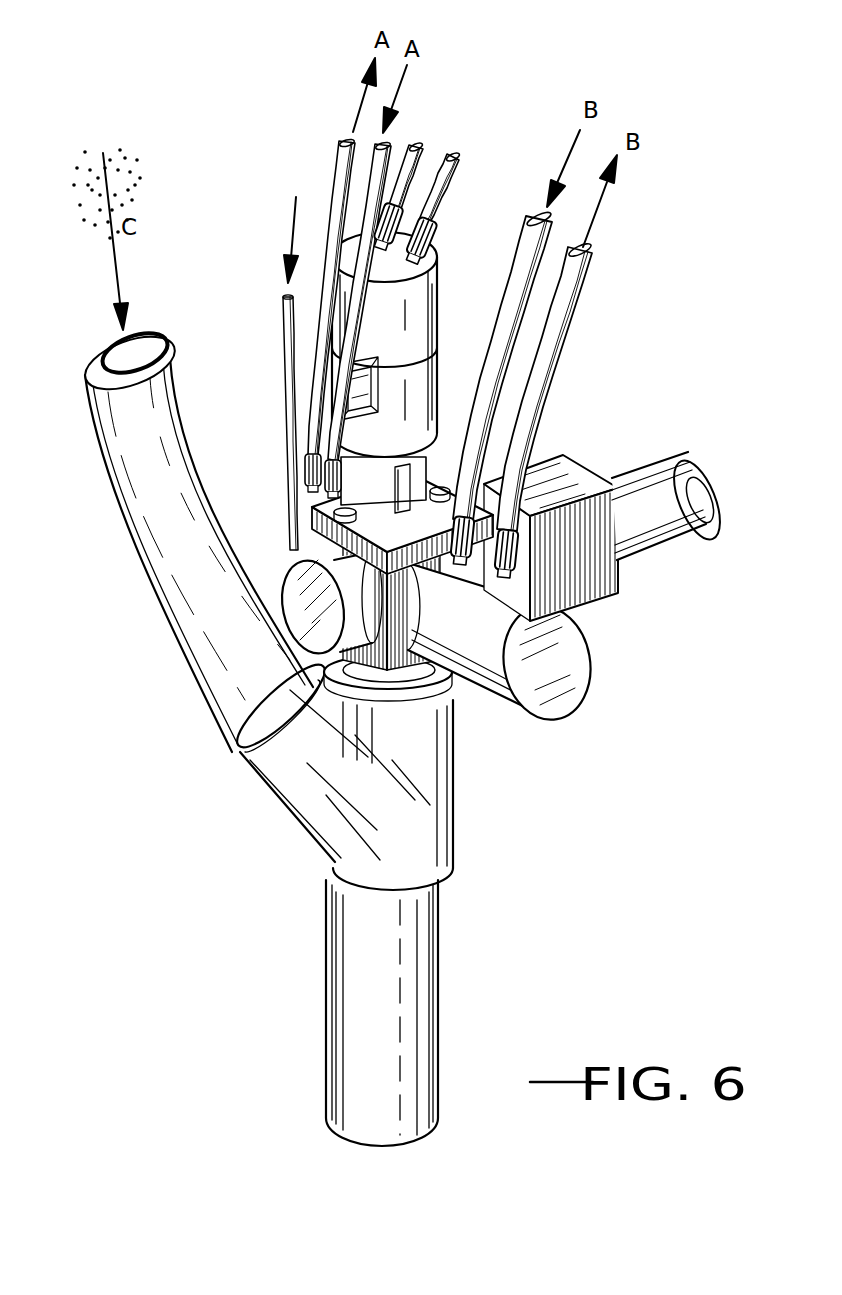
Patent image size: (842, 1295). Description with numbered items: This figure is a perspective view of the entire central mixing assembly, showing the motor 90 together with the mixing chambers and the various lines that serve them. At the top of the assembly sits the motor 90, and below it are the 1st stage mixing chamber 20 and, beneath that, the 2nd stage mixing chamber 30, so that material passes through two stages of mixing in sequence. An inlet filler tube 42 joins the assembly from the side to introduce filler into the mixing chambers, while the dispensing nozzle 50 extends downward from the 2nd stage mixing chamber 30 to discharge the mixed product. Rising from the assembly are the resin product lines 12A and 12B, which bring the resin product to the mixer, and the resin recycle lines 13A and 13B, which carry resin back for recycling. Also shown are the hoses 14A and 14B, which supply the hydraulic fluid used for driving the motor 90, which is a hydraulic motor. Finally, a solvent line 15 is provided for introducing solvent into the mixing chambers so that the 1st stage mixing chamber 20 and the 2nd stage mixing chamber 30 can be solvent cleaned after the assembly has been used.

The resin product line 12A is at (388, 153).
The resin product line 12B is at (510, 273).
The resin recycle line 13A is at (340, 163).
The resin recycle line 13B is at (573, 316).
The hose 14A is at (413, 160).
The hose 14B is at (444, 186).
The solvent line 15 is at (279, 337).
The 1st stage mixing chamber 20 is at (406, 662).
The 2nd stage mixing chamber 30 is at (430, 810).
The inlet filler tube 42 is at (153, 533).
The dispensing nozzle 50 is at (440, 993).
The motor 90 is at (404, 321).